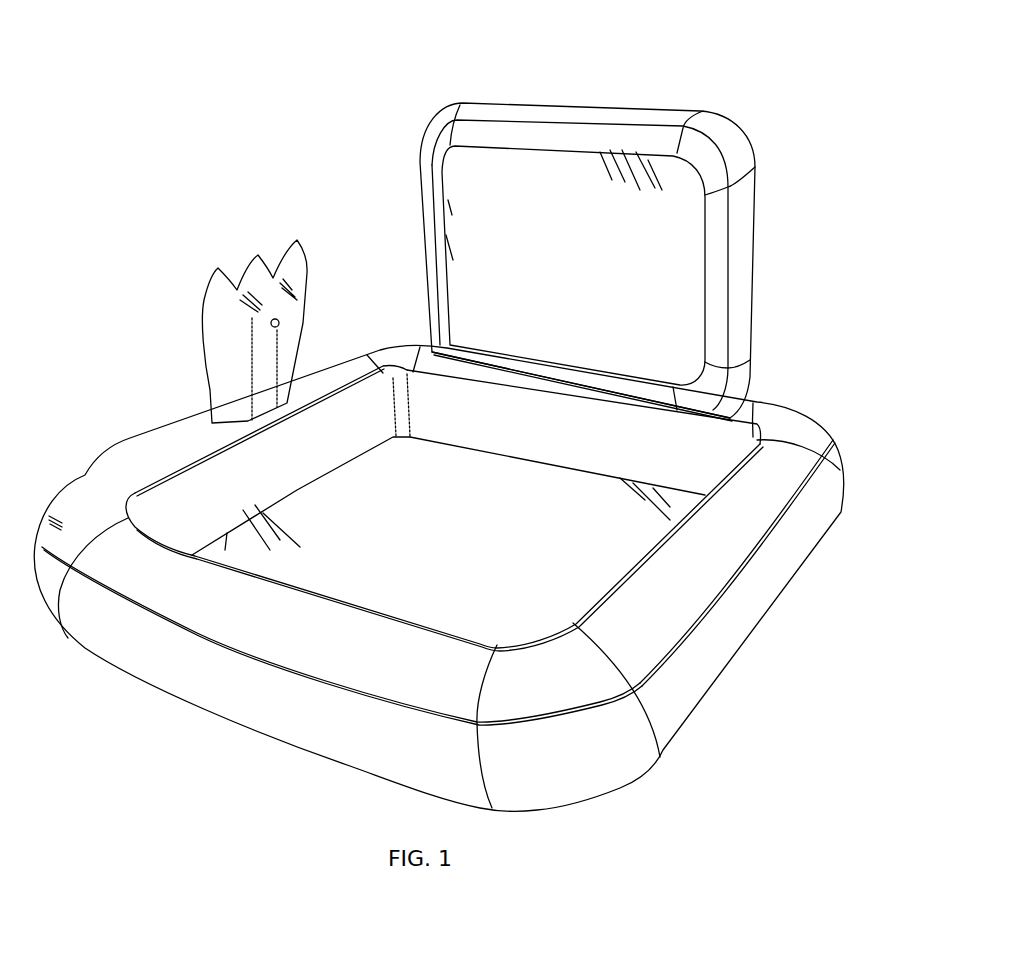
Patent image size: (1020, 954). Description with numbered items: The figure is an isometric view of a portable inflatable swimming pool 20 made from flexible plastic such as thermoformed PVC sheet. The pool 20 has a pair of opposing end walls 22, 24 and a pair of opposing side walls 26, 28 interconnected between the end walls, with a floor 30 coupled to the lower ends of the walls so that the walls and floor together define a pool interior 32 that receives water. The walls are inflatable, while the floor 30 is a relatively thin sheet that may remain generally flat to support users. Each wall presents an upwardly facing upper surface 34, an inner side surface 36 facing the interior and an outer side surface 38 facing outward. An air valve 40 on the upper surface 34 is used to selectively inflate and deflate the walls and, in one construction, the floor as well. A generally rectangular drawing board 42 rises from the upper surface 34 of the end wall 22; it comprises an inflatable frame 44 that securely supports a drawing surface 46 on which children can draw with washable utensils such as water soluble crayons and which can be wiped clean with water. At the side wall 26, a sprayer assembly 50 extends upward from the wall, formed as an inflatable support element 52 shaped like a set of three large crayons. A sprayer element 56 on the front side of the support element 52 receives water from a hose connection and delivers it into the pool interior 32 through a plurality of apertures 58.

The portable inflatable swimming pool 20 is at (634, 52).
The end wall 22 is at (727, 452).
The end wall 24 is at (210, 653).
The side wall 26 is at (145, 463).
The side wall 28 is at (685, 695).
The floor 30 is at (440, 537).
The pool interior 32 is at (608, 566).
The upper surface 34 is at (432, 347).
The inner side surface 36 is at (550, 433).
The outer side surface 38 is at (367, 745).
The air valve 40 is at (57, 512).
The drawing board 42 is at (440, 150).
The frame 44 is at (577, 135).
The drawing surface 46 is at (563, 257).
The sprayer assembly 50 is at (246, 253).
The support element 52 is at (287, 353).
The sprayer element 56 is at (287, 313).
The apertures 58 is at (270, 326).